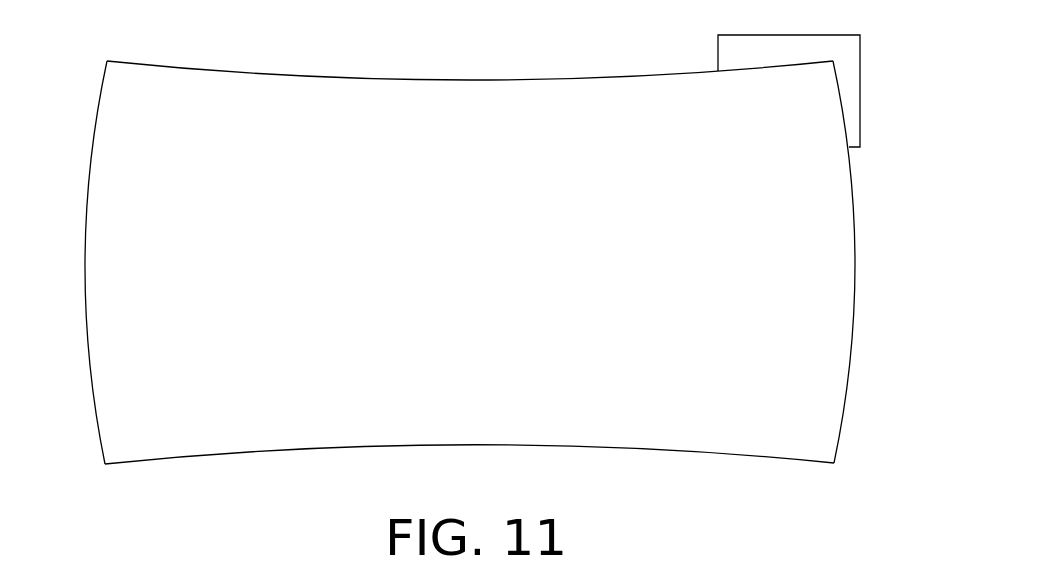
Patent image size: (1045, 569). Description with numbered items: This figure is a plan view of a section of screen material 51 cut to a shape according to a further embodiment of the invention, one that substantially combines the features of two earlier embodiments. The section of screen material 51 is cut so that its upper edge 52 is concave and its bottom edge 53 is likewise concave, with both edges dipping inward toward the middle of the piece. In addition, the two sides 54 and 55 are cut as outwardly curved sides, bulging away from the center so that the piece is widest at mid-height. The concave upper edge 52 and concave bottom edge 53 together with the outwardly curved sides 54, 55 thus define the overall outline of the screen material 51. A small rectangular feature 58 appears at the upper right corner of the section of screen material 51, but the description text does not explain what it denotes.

The section of screen material 51 is at (481, 262).
The concave upper edge 52 is at (437, 80).
The concave bottom edge 53 is at (515, 445).
The outwardly curved side 54 is at (84, 210).
The outwardly curved side 55 is at (855, 260).
The tab 58 is at (860, 118).